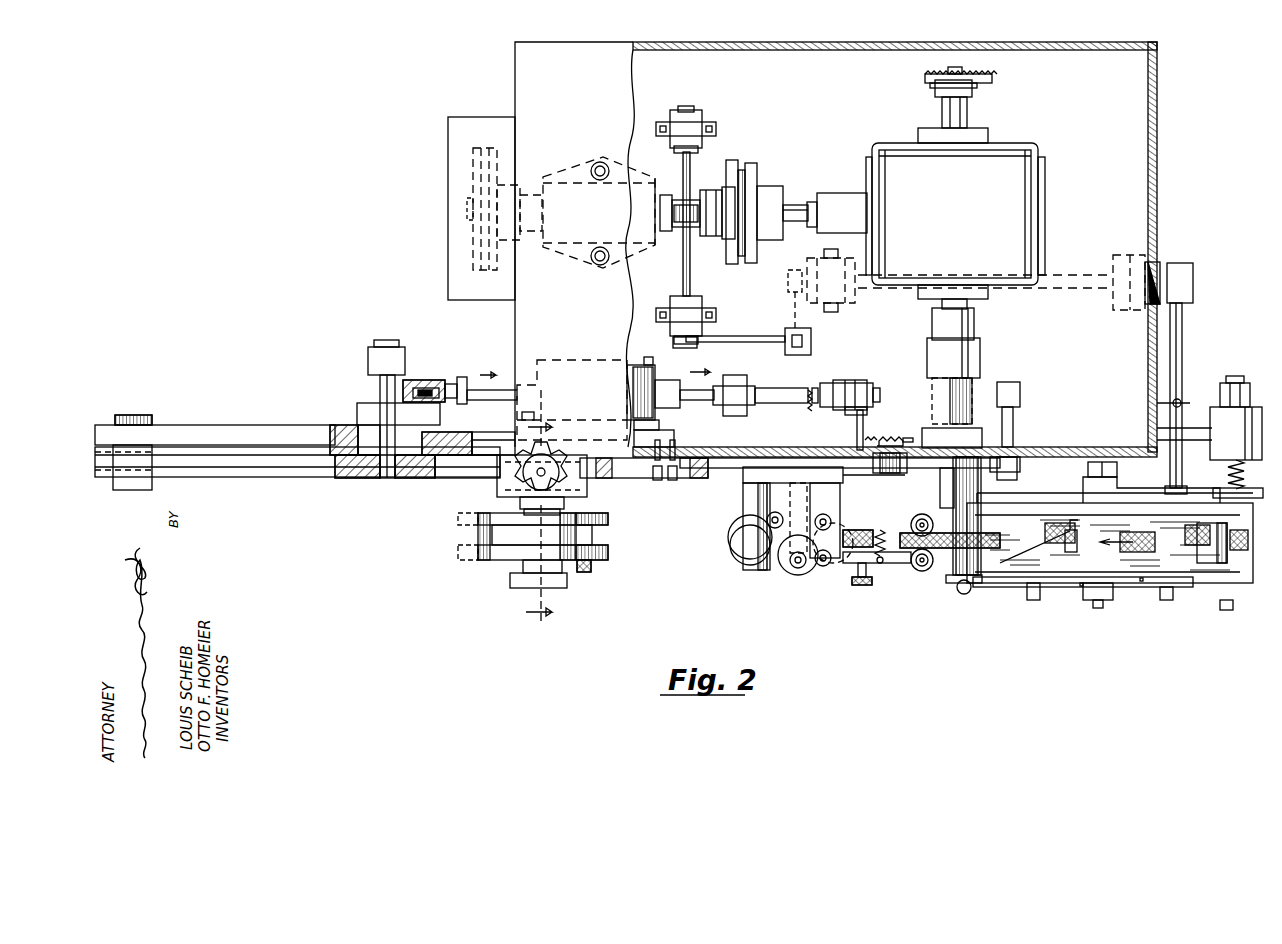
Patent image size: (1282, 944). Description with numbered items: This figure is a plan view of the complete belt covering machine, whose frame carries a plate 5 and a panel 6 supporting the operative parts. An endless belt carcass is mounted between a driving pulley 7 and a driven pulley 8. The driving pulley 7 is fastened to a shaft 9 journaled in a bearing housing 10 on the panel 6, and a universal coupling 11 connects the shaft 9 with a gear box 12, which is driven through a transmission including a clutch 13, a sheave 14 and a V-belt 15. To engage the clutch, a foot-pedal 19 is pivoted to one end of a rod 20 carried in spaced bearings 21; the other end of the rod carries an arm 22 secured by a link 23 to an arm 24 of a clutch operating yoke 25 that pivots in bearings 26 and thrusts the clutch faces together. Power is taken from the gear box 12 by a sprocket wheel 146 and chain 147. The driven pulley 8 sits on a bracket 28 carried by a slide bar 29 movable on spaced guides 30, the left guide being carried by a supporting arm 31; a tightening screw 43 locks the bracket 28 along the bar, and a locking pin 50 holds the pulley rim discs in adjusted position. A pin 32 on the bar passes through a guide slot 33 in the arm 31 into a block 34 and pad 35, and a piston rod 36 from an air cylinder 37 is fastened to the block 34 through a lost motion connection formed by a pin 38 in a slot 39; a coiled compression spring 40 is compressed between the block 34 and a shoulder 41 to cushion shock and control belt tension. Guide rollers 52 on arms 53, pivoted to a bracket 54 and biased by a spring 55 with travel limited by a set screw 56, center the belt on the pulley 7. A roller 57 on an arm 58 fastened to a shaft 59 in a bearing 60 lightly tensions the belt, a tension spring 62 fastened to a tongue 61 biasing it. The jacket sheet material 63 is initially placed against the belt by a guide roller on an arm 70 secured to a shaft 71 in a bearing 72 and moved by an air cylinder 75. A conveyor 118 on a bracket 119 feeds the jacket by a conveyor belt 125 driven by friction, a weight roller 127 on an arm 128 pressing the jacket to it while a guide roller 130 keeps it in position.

The plate 5 is at (1157, 198).
The panel 6 is at (1058, 450).
The driving pulley 7 is at (539, 516).
The driven pulley 8 is at (490, 562).
The shaft 9 is at (967, 430).
The bearing housing 10 is at (978, 520).
The universal coupling 11 is at (975, 322).
The gear box 12 is at (1035, 190).
The clutch 13 is at (738, 264).
The sheave 14 is at (497, 262).
The V-belt 15 is at (484, 272).
The foot-pedal 19 is at (1182, 340).
The rod 20 is at (1074, 290).
The bearings 21 is at (1122, 260).
The arm 22 is at (792, 322).
The link 23 is at (806, 348).
The arm 24 is at (738, 344).
The clutch operating yoke 25 is at (680, 262).
The bearings 26 is at (702, 122).
The bracket 28 is at (588, 486).
The slide bar 29 is at (432, 480).
The guides 30 is at (152, 482).
The supporting arm 31 is at (228, 424).
The pin 32 is at (378, 480).
The guide slot 33 is at (408, 480).
The block 34 is at (400, 380).
The pad 35 is at (340, 424).
The piston rod 36 is at (487, 402).
The air cylinder 37 is at (550, 362).
The pin 38 is at (432, 380).
The slot 39 is at (425, 402).
The coiled compression spring 40 is at (456, 400).
The shoulder 41 is at (463, 377).
The tightening screw 43 is at (500, 488).
The locking pin 50 is at (590, 572).
The guide rollers 52 is at (932, 520).
The arms 53 is at (900, 565).
The bracket 54 is at (818, 575).
The spring 55 is at (882, 528).
The set screw 56 is at (862, 586).
The roller 57 is at (755, 570).
The arm 58 is at (743, 478).
The shaft 59 is at (873, 466).
The bearing 60 is at (930, 474).
The tongue 61 is at (908, 440).
The tension spring 62 is at (868, 440).
The sheet material 63 is at (1124, 556).
The arm 70 is at (1017, 472).
The shaft 71 is at (1018, 428).
The bearing 72 is at (1022, 465).
The air cylinder 75 is at (664, 364).
The conveyor 118 is at (1145, 572).
The bracket 119 is at (1112, 458).
The conveyor belt 125 is at (1078, 586).
The roller 127 is at (1205, 563).
The arm 128 is at (1130, 492).
The guide roller 130 is at (1068, 555).
The sprocket wheel 146 is at (926, 78).
The chain 147 is at (980, 88).